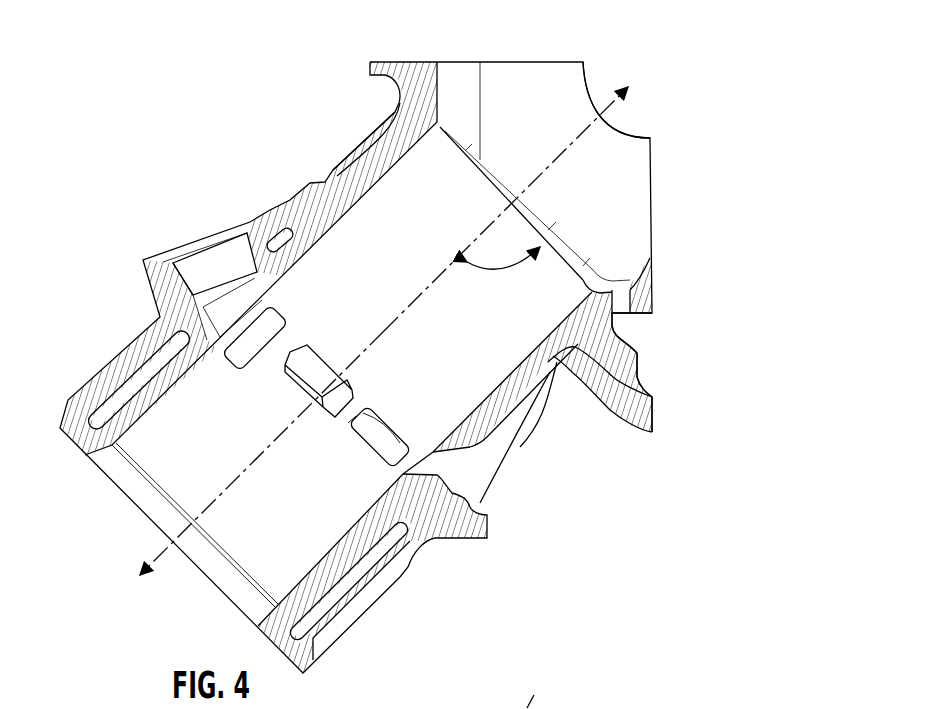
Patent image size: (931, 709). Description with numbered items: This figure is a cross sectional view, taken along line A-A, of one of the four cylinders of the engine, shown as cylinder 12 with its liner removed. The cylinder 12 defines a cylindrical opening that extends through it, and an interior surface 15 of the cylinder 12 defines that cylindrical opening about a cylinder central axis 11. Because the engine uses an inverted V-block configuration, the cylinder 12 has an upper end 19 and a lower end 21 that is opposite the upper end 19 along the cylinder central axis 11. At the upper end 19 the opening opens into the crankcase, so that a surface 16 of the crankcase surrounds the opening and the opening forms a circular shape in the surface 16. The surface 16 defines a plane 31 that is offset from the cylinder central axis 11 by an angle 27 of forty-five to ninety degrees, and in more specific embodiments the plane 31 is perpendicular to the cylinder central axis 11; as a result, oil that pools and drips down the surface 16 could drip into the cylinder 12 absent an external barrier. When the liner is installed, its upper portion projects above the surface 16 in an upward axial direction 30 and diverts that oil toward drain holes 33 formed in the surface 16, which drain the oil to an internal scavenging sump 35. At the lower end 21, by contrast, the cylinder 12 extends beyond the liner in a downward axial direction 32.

The cylinder central axis 11 is at (578, 137).
The cylinder 12 is at (220, 130).
The interior surface 15 is at (487, 360).
The surface 16 is at (545, 218).
The upper end 19 is at (490, 178).
The lower end 21 is at (120, 492).
The angle 27 is at (500, 270).
The upward axial direction 30 is at (523, 195).
The plane 31 is at (560, 257).
The downward axial direction 32 is at (242, 471).
The drain holes 33 is at (628, 301).
The internal scavenging sump 35 is at (654, 360).